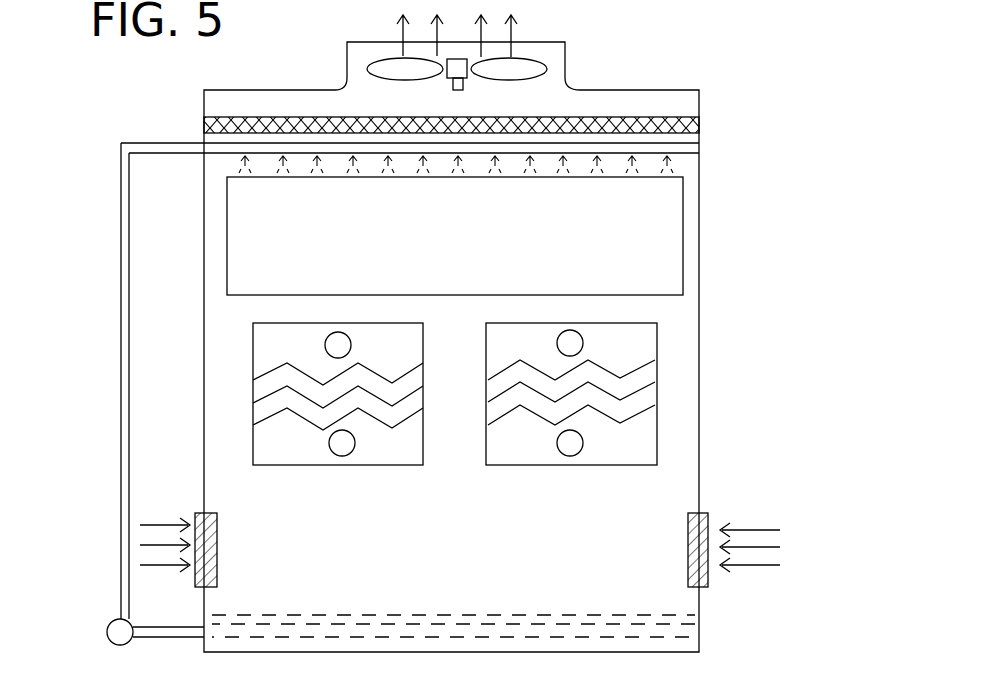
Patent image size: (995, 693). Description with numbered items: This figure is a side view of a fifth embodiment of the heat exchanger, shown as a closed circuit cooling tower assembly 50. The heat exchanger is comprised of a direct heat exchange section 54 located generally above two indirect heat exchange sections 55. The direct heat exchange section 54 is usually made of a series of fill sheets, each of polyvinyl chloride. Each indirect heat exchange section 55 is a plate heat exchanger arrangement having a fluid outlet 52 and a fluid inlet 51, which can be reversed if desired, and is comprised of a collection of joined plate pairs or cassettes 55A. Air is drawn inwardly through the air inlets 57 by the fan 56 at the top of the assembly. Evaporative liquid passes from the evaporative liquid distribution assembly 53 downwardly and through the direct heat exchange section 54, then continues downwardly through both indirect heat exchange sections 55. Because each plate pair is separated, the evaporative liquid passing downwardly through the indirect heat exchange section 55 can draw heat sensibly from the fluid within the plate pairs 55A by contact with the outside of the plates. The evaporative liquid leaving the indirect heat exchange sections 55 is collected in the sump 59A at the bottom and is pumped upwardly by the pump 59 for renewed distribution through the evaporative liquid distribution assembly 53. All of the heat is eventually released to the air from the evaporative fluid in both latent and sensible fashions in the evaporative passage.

The closed circuit cooling tower assembly 50 is at (116, 103).
The fluid inlet 51 is at (342, 443).
The fluid outlet 52 is at (338, 345).
The evaporative liquid distribution assembly 53 is at (222, 154).
The direct heat exchange section 54 is at (652, 217).
The indirect heat exchange section 55 is at (253, 385).
The plate pairs or cassettes 55A is at (640, 365).
The fan 56 is at (536, 57).
The air inlets 57 is at (219, 540).
The pump 59 is at (112, 622).
The sump 59A is at (375, 613).